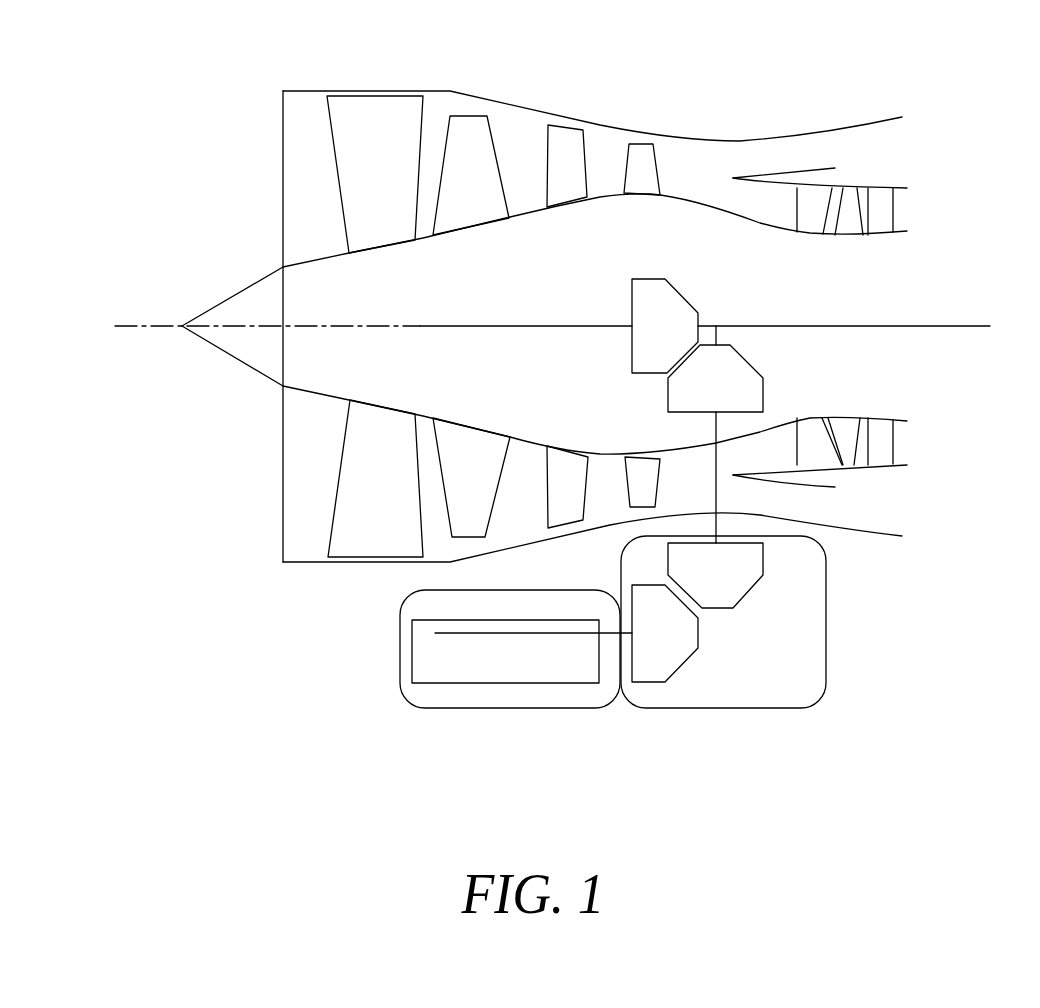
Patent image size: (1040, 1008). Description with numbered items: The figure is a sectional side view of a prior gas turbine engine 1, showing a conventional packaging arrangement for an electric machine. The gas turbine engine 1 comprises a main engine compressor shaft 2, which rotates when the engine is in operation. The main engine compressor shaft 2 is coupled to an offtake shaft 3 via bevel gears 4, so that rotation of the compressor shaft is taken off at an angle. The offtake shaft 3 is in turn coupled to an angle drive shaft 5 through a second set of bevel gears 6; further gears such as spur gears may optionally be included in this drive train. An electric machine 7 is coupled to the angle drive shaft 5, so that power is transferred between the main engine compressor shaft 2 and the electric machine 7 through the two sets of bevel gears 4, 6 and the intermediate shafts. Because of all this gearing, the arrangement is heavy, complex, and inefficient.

The gas turbine engine 1 is at (228, 136).
The main engine compressor shaft 2 is at (546, 325).
The offtake shaft 3 is at (716, 458).
The bevel gears 4 is at (668, 388).
The angle drive shaft 5 is at (472, 633).
The second set of bevel gears 6 is at (698, 633).
The electric machine 7 is at (412, 670).